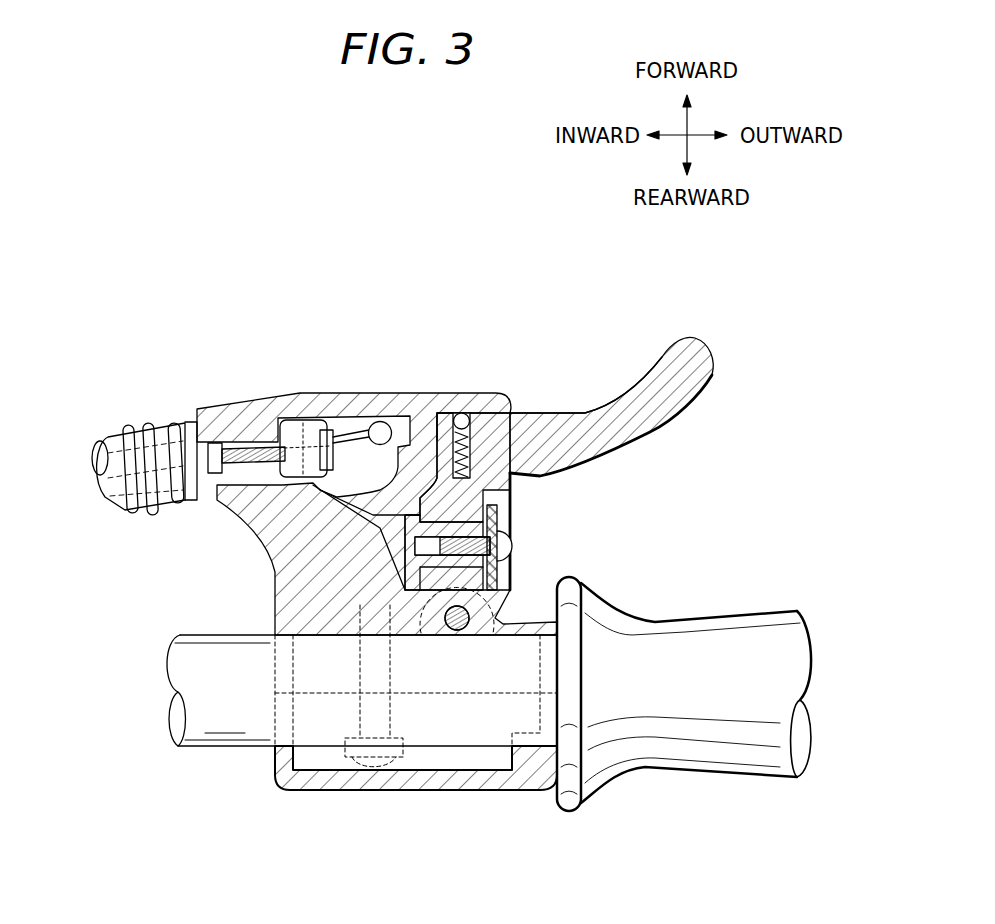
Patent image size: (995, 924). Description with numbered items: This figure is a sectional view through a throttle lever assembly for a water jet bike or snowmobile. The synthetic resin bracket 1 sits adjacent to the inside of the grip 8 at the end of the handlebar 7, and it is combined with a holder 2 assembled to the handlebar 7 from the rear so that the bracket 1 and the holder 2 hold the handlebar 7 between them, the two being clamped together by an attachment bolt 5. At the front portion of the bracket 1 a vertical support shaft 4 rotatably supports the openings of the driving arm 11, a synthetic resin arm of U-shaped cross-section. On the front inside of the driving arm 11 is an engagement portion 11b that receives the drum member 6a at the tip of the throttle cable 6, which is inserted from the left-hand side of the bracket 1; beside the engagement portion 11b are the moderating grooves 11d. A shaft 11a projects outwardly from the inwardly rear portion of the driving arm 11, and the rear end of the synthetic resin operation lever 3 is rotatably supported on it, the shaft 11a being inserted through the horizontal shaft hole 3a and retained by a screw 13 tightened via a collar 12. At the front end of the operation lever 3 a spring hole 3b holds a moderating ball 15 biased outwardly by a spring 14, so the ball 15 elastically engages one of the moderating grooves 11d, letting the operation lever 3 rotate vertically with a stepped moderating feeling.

The bracket 1 is at (293, 601).
The holder 2 is at (420, 780).
The operation lever 3 is at (678, 352).
The shaft hole 3a is at (476, 490).
The spring hole 3b is at (573, 410).
The support shaft 4 is at (457, 630).
The attachment bolt 5 is at (357, 757).
The throttle cable 6 is at (260, 402).
The drum member 6a is at (372, 410).
The handlebar 7 is at (255, 717).
The grip 8 is at (684, 700).
The driving arm 11 is at (416, 412).
The shaft 11a is at (510, 513).
The engagement portion 11b is at (380, 421).
The moderating grooves 11d is at (440, 410).
The collar 12 is at (510, 568).
The screw 13 is at (510, 547).
The spring 14 is at (527, 410).
The moderating ball 15 is at (483, 410).